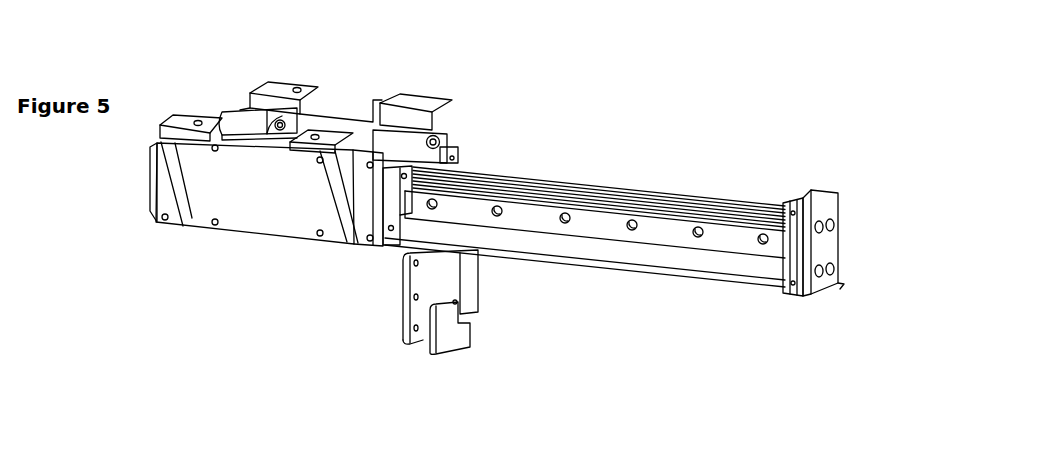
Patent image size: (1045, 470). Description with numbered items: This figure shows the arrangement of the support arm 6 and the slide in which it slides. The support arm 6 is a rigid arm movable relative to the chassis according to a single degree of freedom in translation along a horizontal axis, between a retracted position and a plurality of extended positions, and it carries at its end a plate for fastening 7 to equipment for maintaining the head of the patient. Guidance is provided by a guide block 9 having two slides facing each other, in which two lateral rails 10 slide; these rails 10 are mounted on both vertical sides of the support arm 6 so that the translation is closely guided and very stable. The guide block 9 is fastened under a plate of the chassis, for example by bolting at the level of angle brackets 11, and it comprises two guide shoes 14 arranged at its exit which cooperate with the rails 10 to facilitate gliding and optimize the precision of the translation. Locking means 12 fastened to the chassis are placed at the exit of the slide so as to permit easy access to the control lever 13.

The support arm 6 is at (619, 173).
The plate for fastening 7 is at (845, 239).
The guide block 9 is at (222, 209).
The lateral rails 10 is at (713, 187).
The angle brackets 11 is at (195, 117).
The locking means 12 is at (414, 308).
The control lever 13 is at (446, 338).
The guide shoes 14 is at (460, 141).